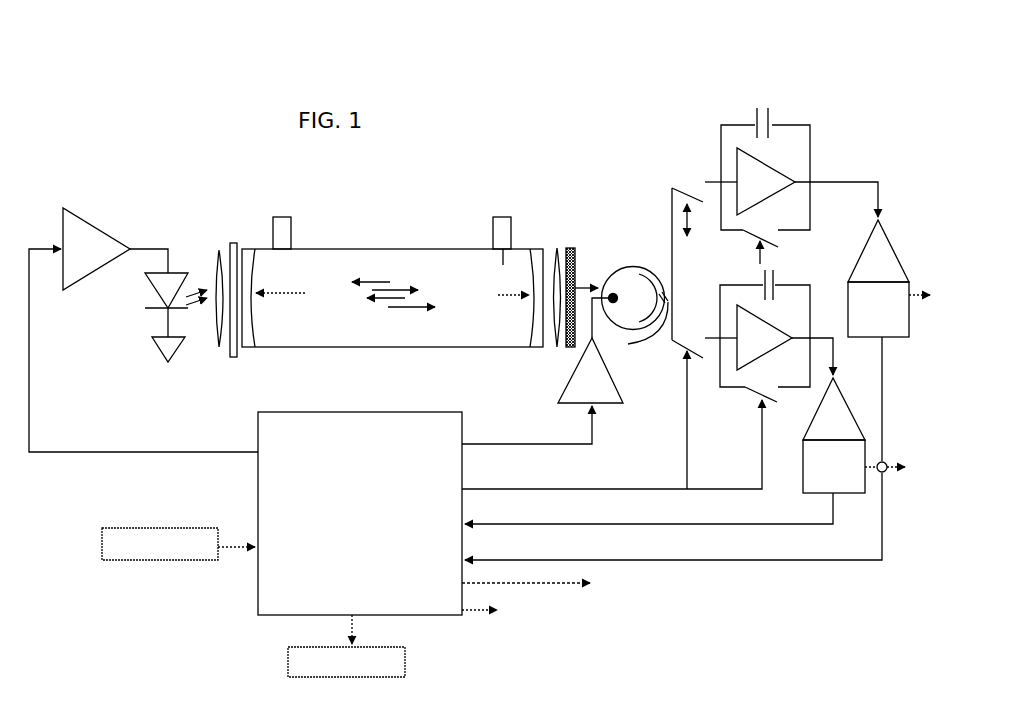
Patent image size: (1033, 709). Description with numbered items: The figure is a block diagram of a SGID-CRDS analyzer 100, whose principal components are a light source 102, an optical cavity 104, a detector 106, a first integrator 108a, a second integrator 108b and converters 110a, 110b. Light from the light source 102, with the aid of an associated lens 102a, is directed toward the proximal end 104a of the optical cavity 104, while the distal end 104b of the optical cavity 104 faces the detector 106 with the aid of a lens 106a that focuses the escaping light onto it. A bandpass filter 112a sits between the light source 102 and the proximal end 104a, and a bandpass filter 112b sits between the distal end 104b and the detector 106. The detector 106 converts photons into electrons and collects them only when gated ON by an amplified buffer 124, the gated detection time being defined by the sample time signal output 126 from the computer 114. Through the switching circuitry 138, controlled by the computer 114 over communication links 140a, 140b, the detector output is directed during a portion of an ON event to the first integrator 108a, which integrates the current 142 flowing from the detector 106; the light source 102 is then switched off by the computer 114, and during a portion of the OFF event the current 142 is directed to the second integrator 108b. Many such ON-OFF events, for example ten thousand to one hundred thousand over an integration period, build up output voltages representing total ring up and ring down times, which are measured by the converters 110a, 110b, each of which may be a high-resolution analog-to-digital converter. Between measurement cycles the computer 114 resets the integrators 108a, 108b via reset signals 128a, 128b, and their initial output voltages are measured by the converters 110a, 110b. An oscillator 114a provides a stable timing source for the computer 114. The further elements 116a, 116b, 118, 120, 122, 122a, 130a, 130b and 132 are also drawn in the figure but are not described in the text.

The SGID-CRDS analyzer 100 is at (674, 112).
The light source 102 is at (147, 280).
The lens 102a is at (216, 262).
The optical cavity 104 is at (470, 249).
The proximal end 104a is at (286, 304).
The distal end 104b is at (508, 286).
The detector 106 is at (628, 303).
The lens 106a is at (557, 248).
The first integrator 108a is at (792, 285).
The second integrator 108b is at (782, 125).
The converter 110a is at (854, 435).
The converter 110b is at (892, 240).
The bandpass filter 112a is at (233, 243).
The bandpass filter 112b is at (571, 248).
The computer 114 is at (360, 513).
The oscillator 114a is at (178, 544).
The first cavity mirror 116a is at (250, 352).
The second cavity mirror 116b is at (535, 350).
The gas inlet port 118 is at (285, 217).
The gas outlet port 120 is at (498, 217).
The LED drive amplifier 122 is at (92, 222).
The LED drive signal line 122a is at (30, 400).
The amplified buffer 124 is at (590, 370).
The sample time signal output 126 is at (483, 446).
The reset signal 128a is at (540, 491).
The reset signal 128b is at (477, 613).
The first ADC output line 130a is at (562, 527).
The second ADC output line 130b is at (693, 563).
The output / display 132 is at (346, 646).
The switching circuitry 138 is at (672, 188).
The communication link 140a is at (684, 403).
The communication link 140b is at (690, 222).
The current 142 is at (640, 326).